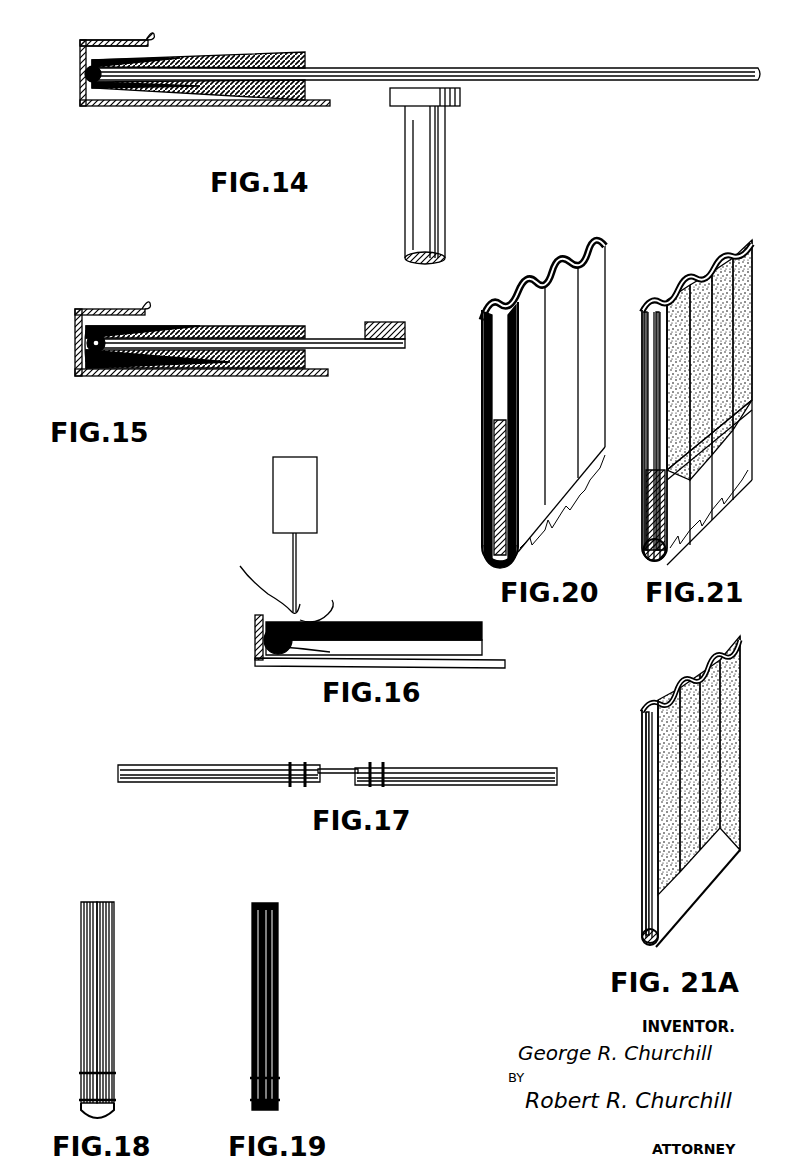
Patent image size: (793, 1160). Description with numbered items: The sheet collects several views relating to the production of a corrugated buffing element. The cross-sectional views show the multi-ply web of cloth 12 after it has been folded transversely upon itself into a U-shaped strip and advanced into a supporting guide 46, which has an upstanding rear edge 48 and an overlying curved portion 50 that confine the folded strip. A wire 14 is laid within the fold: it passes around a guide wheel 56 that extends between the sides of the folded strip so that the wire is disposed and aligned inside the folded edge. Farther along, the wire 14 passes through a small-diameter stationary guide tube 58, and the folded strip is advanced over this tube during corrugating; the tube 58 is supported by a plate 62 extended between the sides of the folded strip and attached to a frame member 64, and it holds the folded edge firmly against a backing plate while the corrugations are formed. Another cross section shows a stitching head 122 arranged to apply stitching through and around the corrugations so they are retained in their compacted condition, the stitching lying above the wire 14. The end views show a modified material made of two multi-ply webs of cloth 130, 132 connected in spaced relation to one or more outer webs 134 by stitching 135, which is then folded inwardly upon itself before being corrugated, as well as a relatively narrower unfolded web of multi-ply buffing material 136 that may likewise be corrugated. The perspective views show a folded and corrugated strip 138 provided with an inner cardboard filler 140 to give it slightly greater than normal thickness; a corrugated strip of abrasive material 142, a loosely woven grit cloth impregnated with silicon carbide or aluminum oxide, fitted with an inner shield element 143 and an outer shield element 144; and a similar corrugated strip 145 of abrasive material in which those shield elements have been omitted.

In FIG. 14, the multi-ply web of cloth 12 is at (264, 50).
In FIG. 15, the multi-ply web of cloth 12 is at (236, 304).
In FIG. 16, the multi-ply web of cloth 12 is at (400, 622).
In FIG. 20, the multi-ply web of cloth 12 is at (543, 396).
In FIG. 21, the multi-ply web of cloth 12 is at (697, 402).
In FIG. 21A, the multi-ply web of cloth 12 is at (691, 791).
In FIG. 14, the wire 14 is at (80, 82).
In FIG. 15, the wire 14 is at (82, 342).
In FIG. 16, the wire 14 is at (256, 640).
In FIG. 18, the wire 14 is at (100, 1112).
In FIG. 20, the wire 14 is at (487, 562).
In FIG. 21, the wire 14 is at (642, 554).
In FIG. 21A, the wire 14 is at (642, 938).
In FIG. 14, the supporting guide 46 is at (250, 106).
In FIG. 15, the supporting guide 46 is at (192, 376).
In FIG. 16, the supporting guide 46 is at (438, 668).
In FIG. 14, the upstanding rear edge 48 is at (78, 70).
In FIG. 15, the upstanding rear edge 48 is at (74, 332).
In FIG. 14, the overlying curved portion 50 is at (114, 39).
In FIG. 15, the overlying curved portion 50 is at (110, 308).
In FIG. 14, the guide wheel 56 is at (356, 68).
In FIG. 15, the stationary guide tube 58 is at (80, 358).
In FIG. 15, the plate 62 is at (342, 348).
In FIG. 15, the frame member 64 is at (390, 322).
In FIG. 16, the stitching head 122 is at (330, 516).
In FIG. 17, the multi-ply web of cloth 130 is at (250, 782).
In FIG. 18, the multi-ply web of cloth 130 is at (110, 901).
In FIG. 17, the multi-ply web of cloth 132 is at (440, 785).
In FIG. 18, the multi-ply web of cloth 132 is at (94, 901).
In FIG. 17, the outer web 134 is at (340, 769).
In FIG. 18, the outer web 134 is at (114, 1012).
In FIG. 17, the stitching 135 is at (305, 762).
In FIG. 19, the unfolded web of multi-ply buffing material 136 is at (280, 1010).
In FIG. 20, the folded and corrugated strip 138 is at (482, 377).
In FIG. 20, the inner cardboard filler 140 is at (492, 495).
In FIG. 21, the strip of abrasive material 142 is at (650, 310).
In FIG. 21, the inner shield element 143 is at (652, 486).
In FIG. 21, the outer shield element 144 is at (700, 512).
In FIG. 21A, the corrugated strip of abrasive material 145 is at (644, 704).